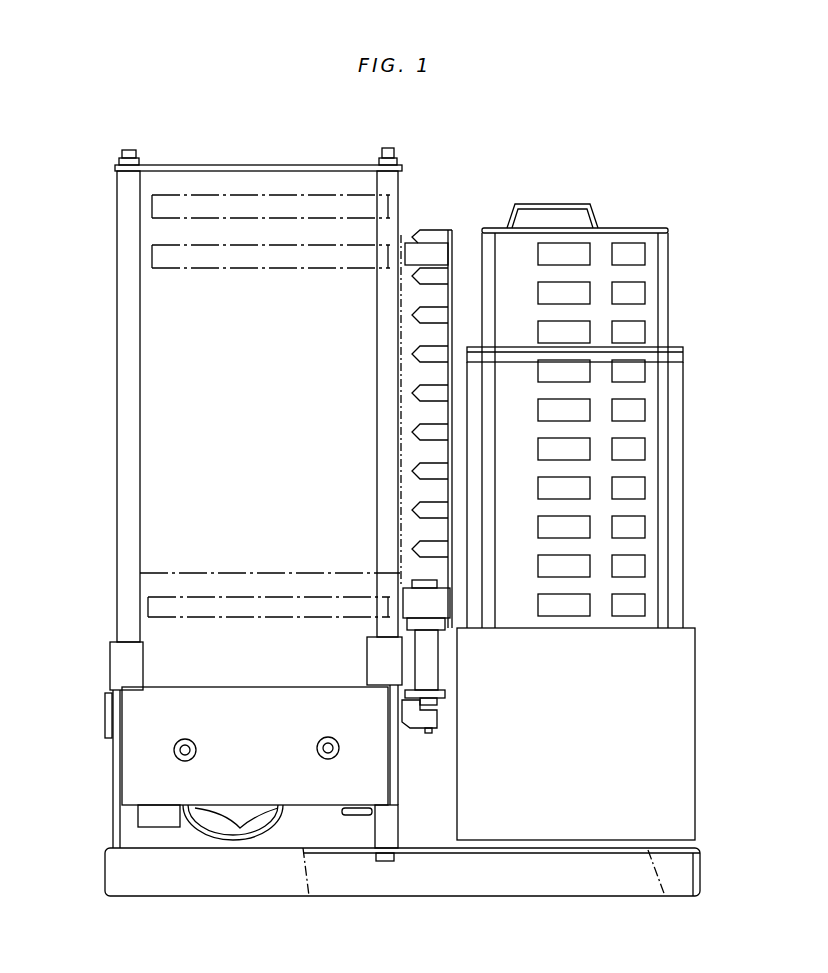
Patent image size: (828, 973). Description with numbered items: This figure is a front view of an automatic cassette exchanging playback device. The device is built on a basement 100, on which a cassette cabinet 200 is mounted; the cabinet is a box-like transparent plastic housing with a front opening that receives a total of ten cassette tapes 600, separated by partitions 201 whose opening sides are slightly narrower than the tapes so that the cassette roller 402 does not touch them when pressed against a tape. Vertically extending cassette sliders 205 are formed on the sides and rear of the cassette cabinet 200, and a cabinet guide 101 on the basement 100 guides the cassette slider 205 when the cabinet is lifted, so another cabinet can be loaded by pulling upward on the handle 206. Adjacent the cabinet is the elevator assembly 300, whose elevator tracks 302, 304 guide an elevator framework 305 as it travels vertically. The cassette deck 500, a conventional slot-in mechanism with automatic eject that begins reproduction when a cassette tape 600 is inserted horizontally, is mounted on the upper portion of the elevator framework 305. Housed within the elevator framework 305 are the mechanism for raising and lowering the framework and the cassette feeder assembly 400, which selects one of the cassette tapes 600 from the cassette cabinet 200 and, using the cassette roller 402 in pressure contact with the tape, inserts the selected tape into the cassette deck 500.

The basement 100 is at (703, 876).
The cabinet guide 101 is at (683, 490).
The cassette cabinet 200 is at (610, 397).
The partitions 201 is at (443, 276).
The cassette sliders 205 is at (492, 298).
The handle 206 is at (586, 204).
The elevator assembly 300 is at (103, 690).
The elevator track 302 is at (125, 207).
The elevator track 304 is at (397, 185).
The elevator framework 305 is at (130, 768).
The cassette feeder assembly 400 is at (413, 736).
The cassette roller 402 is at (410, 601).
The cassette deck 500 is at (155, 587).
The cassette tapes 600 is at (425, 252).